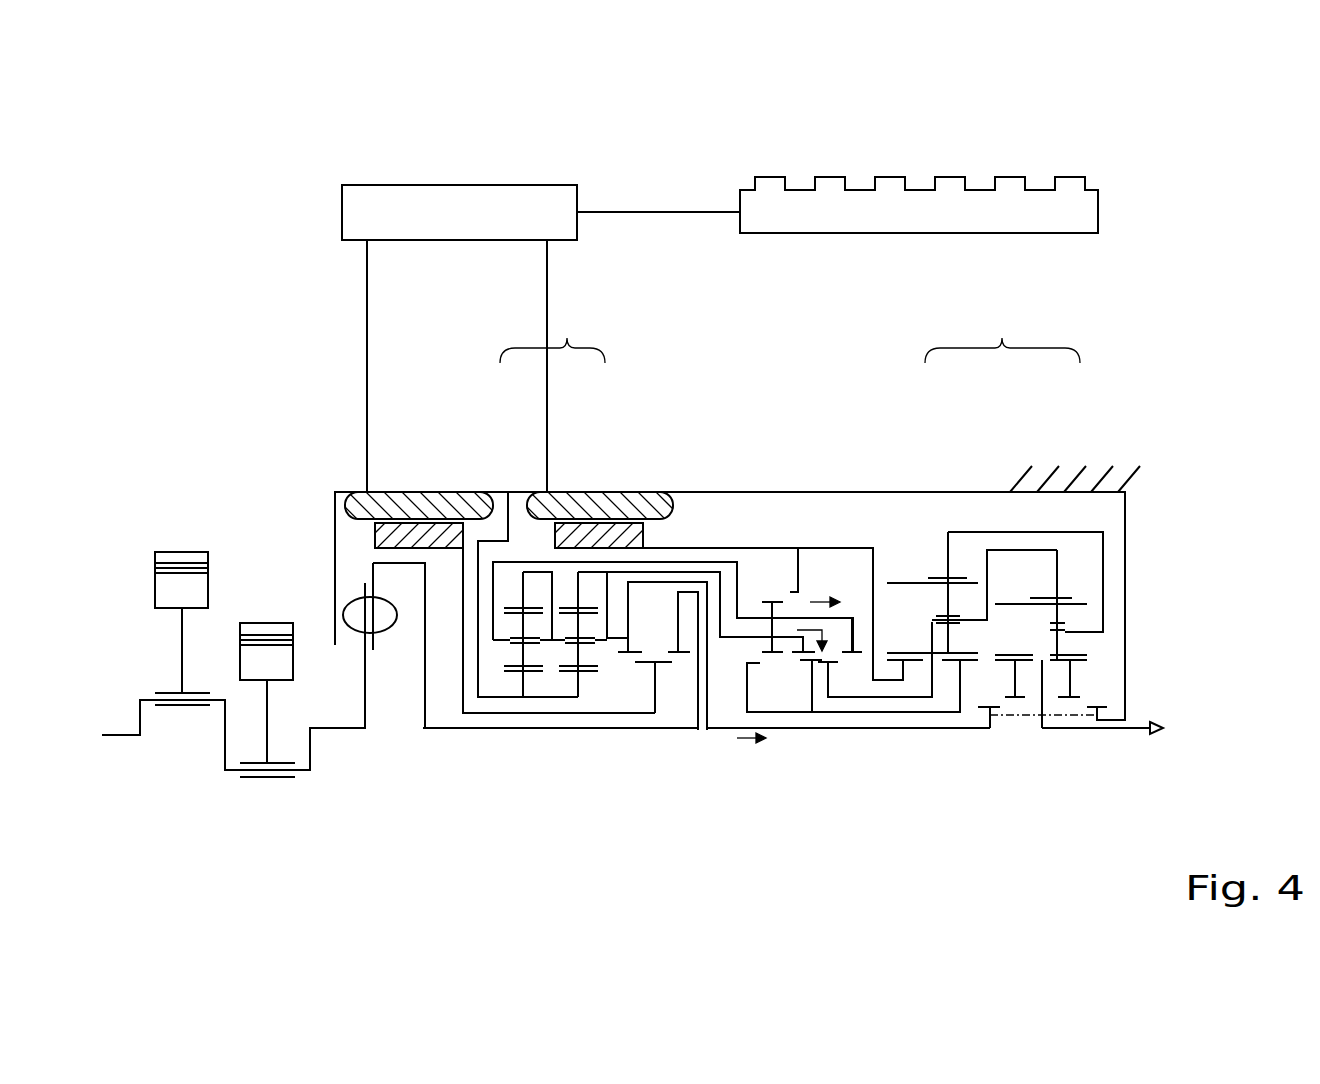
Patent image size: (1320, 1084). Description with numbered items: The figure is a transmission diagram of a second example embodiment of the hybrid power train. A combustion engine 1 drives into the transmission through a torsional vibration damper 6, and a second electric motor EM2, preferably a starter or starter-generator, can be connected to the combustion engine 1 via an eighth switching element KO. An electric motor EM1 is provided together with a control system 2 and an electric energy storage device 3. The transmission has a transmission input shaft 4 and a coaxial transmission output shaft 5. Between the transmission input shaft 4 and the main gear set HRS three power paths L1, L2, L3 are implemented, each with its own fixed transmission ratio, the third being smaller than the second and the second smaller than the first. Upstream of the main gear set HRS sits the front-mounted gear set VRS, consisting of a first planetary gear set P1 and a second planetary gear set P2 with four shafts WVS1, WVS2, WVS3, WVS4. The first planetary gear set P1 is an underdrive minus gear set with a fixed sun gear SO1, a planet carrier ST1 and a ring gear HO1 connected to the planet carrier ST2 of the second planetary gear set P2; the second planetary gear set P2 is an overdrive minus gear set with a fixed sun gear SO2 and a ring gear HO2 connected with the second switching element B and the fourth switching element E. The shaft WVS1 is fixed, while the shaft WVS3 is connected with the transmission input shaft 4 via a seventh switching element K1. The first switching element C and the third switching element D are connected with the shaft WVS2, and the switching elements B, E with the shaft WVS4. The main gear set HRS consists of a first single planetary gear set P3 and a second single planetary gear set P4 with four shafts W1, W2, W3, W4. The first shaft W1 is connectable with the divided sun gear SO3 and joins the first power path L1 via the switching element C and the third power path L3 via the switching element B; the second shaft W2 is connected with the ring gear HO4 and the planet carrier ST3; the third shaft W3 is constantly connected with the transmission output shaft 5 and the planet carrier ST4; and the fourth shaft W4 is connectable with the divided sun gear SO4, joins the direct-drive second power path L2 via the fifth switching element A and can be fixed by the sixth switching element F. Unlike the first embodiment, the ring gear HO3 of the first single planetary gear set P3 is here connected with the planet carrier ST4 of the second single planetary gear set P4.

The combustion engine 1 is at (223, 472).
The control system 2 is at (375, 222).
The electric energy storage device 3 is at (997, 213).
The transmission input shaft 4 is at (487, 728).
The transmission output shaft 5 is at (1118, 730).
The torsional vibration damper 6 is at (357, 622).
The electric motor EM1 is at (637, 448).
The second electric motor EM2 is at (420, 470).
The ring gear of first planetary gear set HO1 is at (513, 606).
The ring gear of second planetary gear set HO2 is at (583, 606).
The ring gear of first single planetary gear set HO3 is at (957, 580).
The ring gear of second single planetary gear set HO4 is at (1068, 597).
The planet carrier of first planetary gear set ST1 is at (512, 642).
The planet carrier of second planetary gear set ST2 is at (574, 642).
The planet carrier of first single planetary gear set ST3 is at (938, 612).
The planet carrier of second single planetary gear set ST4 is at (1068, 640).
The sun gear of first planetary gear set SO1 is at (512, 670).
The sun gear of second planetary gear set SO2 is at (590, 670).
The sun gear of first single planetary gear set SO3 is at (890, 662).
The sun gear of second single planetary gear set SO4 is at (1080, 662).
The first shaft of front-mounted gear set WVS1 is at (478, 593).
The second shaft of front-mounted gear set WVS2 is at (703, 560).
The third shaft of front-mounted gear set WVS3 is at (675, 660).
The fourth shaft of front-mounted gear set WVS4 is at (736, 622).
The first shaft of main gear set W1 is at (955, 690).
The second shaft of main gear set W2 is at (1058, 567).
The third shaft of main gear set W3 is at (1107, 615).
The fourth shaft of main gear set W4 is at (1042, 690).
The seventh switching element K1 is at (622, 655).
The eighth switching element KO is at (630, 602).
The first switching element C is at (763, 600).
The second switching element B is at (773, 656).
The third switching element D is at (848, 657).
The fourth switching element E is at (803, 657).
The fifth switching element A is at (983, 702).
The sixth switching element F is at (1085, 710).
The first planetary gear set P1 is at (523, 440).
The second planetary gear set P2 is at (578, 440).
The first single planetary gear set P3 is at (947, 442).
The second single planetary gear set P4 is at (1057, 442).
The front-mounted gear set VRS is at (553, 331).
The main gear set HRS is at (1002, 331).
The first power path L1 is at (825, 588).
The second power path L2 is at (752, 752).
The third power path L3 is at (828, 638).